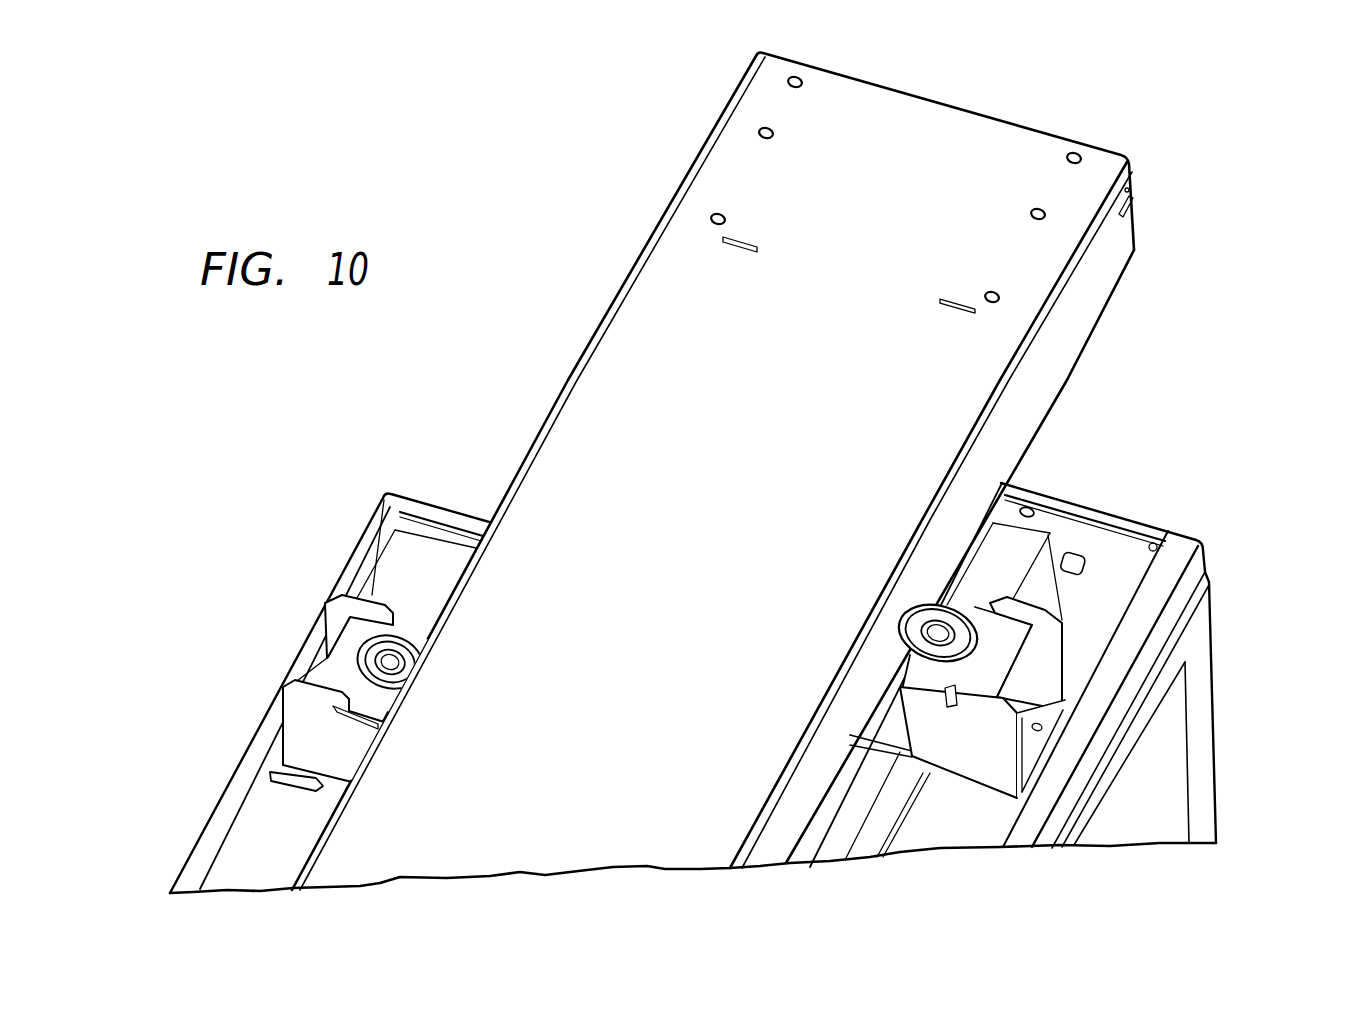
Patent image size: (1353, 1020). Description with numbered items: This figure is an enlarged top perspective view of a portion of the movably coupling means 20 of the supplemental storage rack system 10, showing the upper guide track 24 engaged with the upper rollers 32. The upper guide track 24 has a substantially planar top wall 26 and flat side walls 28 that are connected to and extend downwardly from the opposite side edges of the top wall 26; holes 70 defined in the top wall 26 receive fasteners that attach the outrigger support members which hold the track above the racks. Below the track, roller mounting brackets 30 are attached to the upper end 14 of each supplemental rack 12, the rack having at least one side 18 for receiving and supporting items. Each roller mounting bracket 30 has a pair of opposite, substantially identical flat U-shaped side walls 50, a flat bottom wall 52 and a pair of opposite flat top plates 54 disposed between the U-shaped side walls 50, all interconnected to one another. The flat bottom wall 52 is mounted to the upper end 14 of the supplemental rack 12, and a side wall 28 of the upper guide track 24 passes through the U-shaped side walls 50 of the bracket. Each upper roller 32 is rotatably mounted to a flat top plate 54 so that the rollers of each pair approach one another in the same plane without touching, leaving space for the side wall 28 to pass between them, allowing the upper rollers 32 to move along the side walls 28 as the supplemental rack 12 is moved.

The supplemental storage rack system 10 is at (1230, 364).
The supplemental rack 12 is at (208, 805).
The upper end 14 is at (433, 553).
The side 18 is at (1200, 668).
The movably coupling means 20 is at (1140, 311).
The upper guide track 24 is at (1052, 129).
The top wall 26 is at (688, 552).
The side wall 28 is at (1045, 392).
The roller mounting bracket 30 is at (314, 627).
The upper roller 32 is at (405, 690).
The flat U-shaped side wall 50 is at (352, 592).
The flat bottom wall 52 is at (1027, 745).
The flat top plate 54 is at (380, 707).
The holes 70 is at (798, 90).